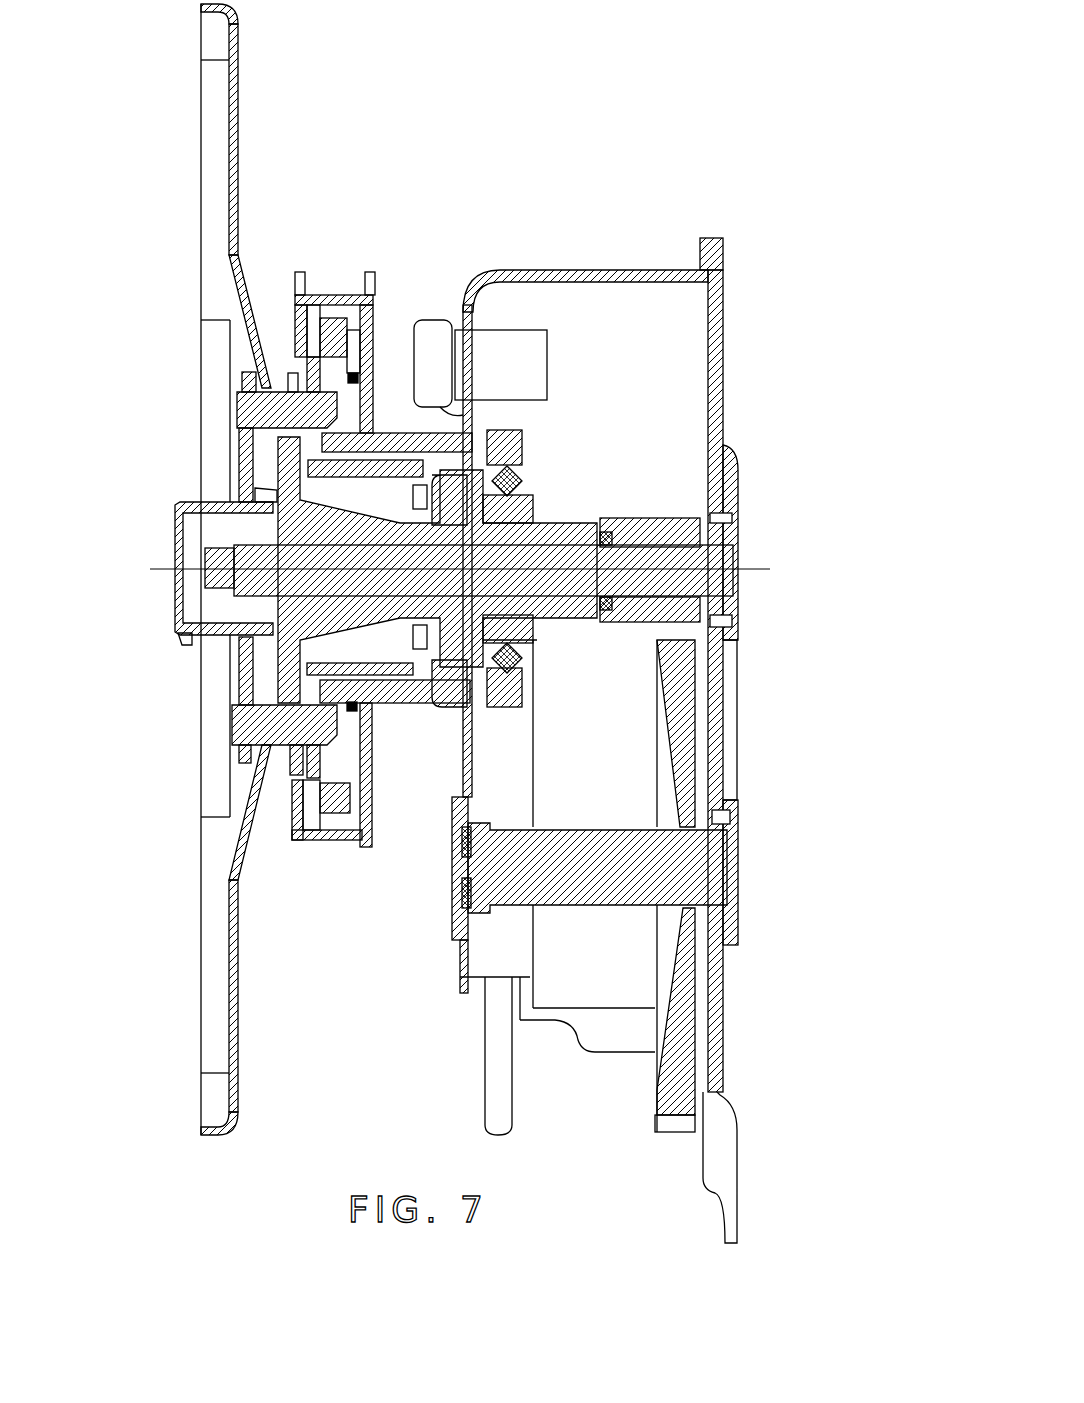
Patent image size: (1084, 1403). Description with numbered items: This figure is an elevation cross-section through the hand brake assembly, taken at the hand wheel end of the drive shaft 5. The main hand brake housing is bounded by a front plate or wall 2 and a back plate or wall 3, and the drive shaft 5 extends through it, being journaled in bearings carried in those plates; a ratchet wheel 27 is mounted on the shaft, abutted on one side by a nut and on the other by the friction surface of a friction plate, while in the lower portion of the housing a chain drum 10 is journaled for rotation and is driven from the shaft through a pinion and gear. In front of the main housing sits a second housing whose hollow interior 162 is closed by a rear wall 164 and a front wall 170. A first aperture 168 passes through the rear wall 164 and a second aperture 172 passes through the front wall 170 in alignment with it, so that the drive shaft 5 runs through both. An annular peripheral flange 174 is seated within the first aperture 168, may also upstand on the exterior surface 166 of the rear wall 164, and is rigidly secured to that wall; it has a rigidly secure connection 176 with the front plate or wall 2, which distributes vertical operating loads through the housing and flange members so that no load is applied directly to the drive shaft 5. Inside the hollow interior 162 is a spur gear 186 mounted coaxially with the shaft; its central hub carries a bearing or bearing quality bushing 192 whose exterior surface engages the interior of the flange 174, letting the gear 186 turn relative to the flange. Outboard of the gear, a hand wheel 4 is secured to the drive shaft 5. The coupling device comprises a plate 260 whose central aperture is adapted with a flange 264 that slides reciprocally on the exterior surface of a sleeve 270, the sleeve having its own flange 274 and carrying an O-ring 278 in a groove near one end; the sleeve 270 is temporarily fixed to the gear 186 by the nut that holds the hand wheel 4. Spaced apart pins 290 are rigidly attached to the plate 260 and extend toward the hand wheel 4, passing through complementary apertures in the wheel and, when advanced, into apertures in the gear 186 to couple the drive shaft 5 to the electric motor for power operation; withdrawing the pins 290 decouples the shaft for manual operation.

The front plate or wall 2 is at (457, 968).
The back plate or wall 3 is at (722, 356).
The hand wheel 4 is at (238, 62).
The drive shaft 5 is at (538, 520).
The chain drum 10 is at (632, 882).
The ratchet wheel 27 is at (512, 695).
The hollow interior 162 is at (333, 300).
The rear wall 164 is at (371, 285).
The exterior surface 166 is at (378, 295).
The first aperture 168 is at (372, 440).
The front wall 170 is at (300, 272).
The second aperture 172 is at (275, 300).
The annular peripheral flange 174 is at (418, 697).
The rigidly secure connection 176 is at (458, 708).
The spur gear 186 is at (332, 812).
The bearing or bearing quality bushing 192 is at (380, 680).
The plate 260 is at (240, 464).
The flange 264 is at (266, 497).
The sleeve 270 is at (176, 592).
The flange 274 is at (178, 634).
The O-ring 278 is at (262, 633).
The pins 290 is at (253, 728).